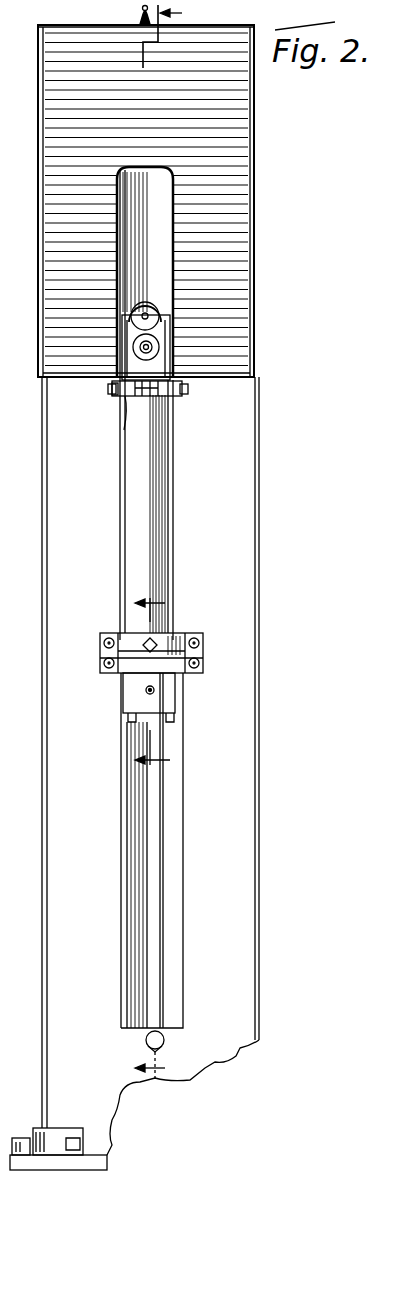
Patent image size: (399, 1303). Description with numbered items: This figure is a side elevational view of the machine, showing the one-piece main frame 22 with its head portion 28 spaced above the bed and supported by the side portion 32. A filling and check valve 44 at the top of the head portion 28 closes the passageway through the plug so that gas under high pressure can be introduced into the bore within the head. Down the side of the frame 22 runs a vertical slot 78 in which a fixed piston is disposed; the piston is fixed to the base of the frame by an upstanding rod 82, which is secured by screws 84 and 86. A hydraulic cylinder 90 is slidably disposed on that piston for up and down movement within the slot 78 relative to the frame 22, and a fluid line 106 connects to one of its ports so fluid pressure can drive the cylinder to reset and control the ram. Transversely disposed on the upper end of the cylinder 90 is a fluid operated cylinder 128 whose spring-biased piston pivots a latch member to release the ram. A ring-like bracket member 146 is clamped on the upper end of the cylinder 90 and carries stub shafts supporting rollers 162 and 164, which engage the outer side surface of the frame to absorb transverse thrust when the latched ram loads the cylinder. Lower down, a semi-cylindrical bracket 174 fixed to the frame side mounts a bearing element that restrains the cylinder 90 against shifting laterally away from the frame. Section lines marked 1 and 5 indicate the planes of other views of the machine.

The main frame 22 is at (258, 214).
The head portion 28 is at (233, 129).
The side portion 32 is at (62, 475).
The filling and check valve 44 is at (136, 14).
The vertical slot 78 is at (176, 804).
The upstanding rod 82 is at (152, 843).
The screw 84 is at (243, 963).
The screw 86 is at (163, 1040).
The hydraulic cylinder 90 is at (157, 445).
The fluid line 106 is at (152, 350).
The fluid operated cylinder 128 is at (150, 320).
The bracket member 146 is at (122, 398).
The roller 162 is at (115, 398).
The roller 164 is at (185, 395).
The semi-cylindrical bracket 174 is at (200, 646).
The section line 1- 1 is at (165, 543).
The section line 5- 5 is at (152, 686).